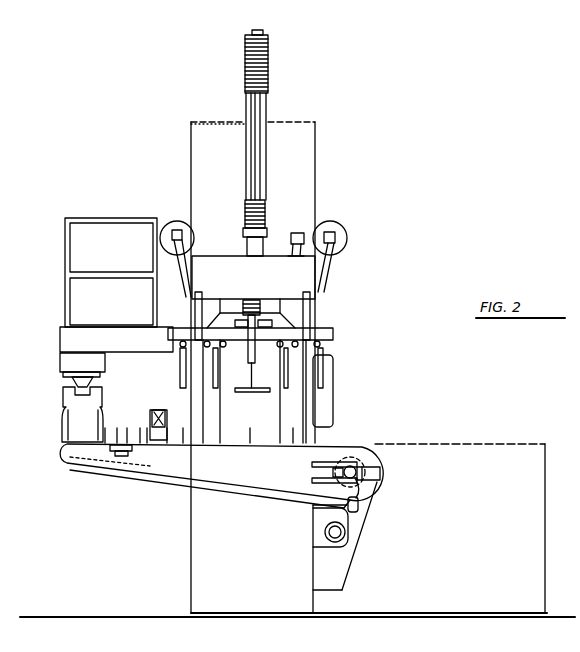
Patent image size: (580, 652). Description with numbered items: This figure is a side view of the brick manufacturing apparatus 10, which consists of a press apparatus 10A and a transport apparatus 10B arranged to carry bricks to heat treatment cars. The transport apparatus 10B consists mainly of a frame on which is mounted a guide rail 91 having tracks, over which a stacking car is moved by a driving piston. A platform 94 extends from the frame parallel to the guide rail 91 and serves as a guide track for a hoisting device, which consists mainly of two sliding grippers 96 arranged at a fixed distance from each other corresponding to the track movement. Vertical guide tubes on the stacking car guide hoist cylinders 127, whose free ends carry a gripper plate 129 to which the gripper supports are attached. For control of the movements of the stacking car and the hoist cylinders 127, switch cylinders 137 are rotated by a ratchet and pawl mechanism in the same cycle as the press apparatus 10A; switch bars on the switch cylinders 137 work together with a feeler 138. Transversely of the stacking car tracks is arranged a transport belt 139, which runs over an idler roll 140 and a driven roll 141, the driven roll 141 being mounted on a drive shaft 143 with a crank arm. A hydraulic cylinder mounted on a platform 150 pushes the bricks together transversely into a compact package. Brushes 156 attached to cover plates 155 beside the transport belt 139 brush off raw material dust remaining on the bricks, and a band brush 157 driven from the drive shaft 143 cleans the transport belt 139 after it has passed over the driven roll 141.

The brick manufacturing apparatus 10 is at (318, 138).
The press apparatus 10A is at (455, 446).
The transport apparatus 10B is at (222, 124).
The hoist cylinder 127 is at (263, 64).
The switch cylinder 137 is at (175, 222).
The feeler 138 is at (300, 233).
The guide rail 91 is at (303, 284).
The gripper plate 129 is at (333, 334).
The platform 94 is at (140, 350).
The sliding gripper 96 is at (62, 364).
The brushes 156 is at (152, 420).
The cover plate 155 is at (155, 440).
The idler roll 140 is at (52, 458).
The platform 150 is at (120, 456).
The transport belt 139 is at (336, 446).
The driven roll 141 is at (370, 464).
The drive shaft 143 is at (366, 486).
The band brush 157 is at (360, 504).